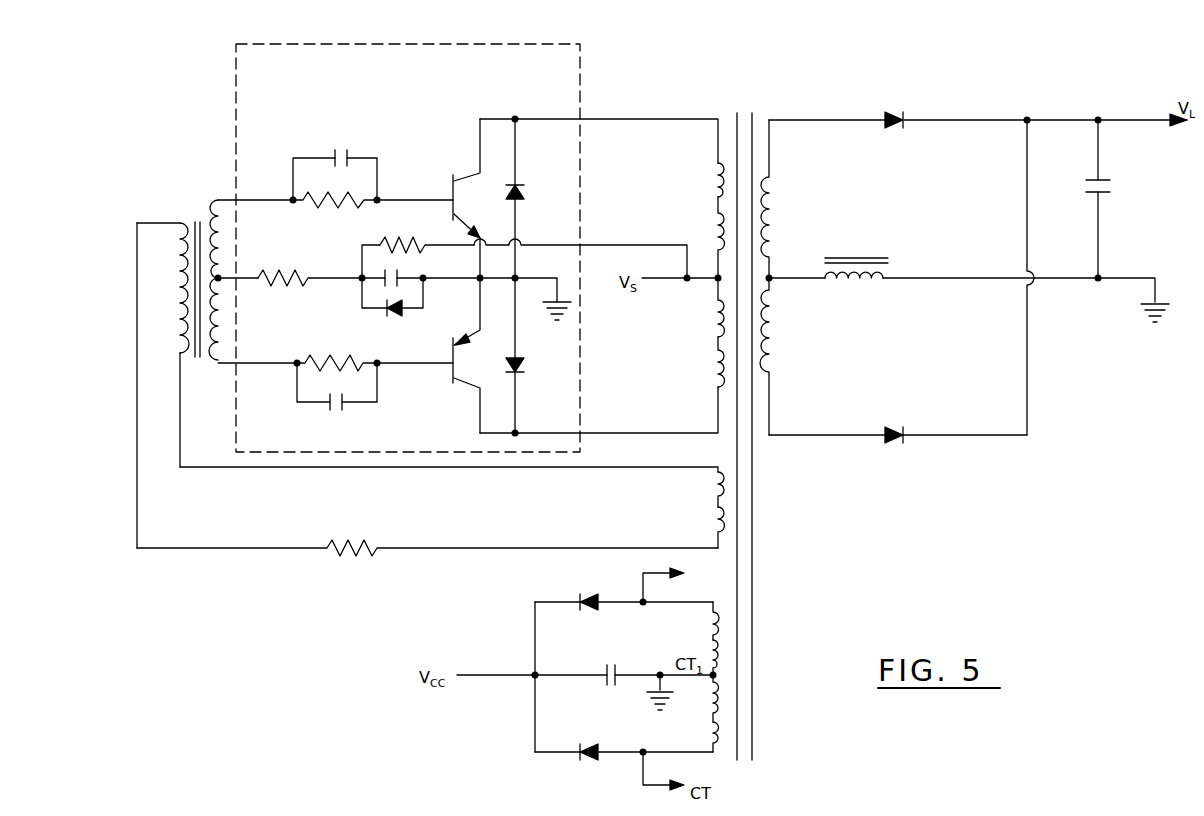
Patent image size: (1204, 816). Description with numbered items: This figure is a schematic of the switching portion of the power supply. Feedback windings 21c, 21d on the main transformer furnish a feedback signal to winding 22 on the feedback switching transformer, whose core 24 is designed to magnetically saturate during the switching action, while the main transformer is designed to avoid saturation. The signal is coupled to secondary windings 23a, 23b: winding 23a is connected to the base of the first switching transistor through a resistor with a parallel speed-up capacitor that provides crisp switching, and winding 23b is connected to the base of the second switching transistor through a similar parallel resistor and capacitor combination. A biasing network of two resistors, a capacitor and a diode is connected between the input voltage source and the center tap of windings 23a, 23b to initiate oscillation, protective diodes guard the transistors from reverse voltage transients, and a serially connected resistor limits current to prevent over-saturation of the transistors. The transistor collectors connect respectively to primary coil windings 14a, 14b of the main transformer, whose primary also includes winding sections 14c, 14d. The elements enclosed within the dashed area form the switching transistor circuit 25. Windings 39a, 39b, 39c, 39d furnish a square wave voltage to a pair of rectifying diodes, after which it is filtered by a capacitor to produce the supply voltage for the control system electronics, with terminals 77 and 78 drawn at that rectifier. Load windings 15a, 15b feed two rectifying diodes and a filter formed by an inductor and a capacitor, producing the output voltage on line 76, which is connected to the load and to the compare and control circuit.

The winding 22 is at (178, 292).
The secondary winding 23a is at (220, 224).
The secondary winding 23b is at (218, 338).
The core of the coupling transformer 24 is at (198, 366).
The switching transistor circuit 25 is at (236, 74).
The primary coil winding 14a is at (716, 182).
The primary coil winding 14b is at (716, 372).
The primary coil winding 14c is at (716, 232).
The primary coil winding 14d is at (716, 312).
The feedback winding 21c is at (716, 490).
The feedback winding 21d is at (716, 514).
The load winding 15a is at (769, 200).
The load winding 15b is at (770, 338).
The winding 39a is at (710, 650).
The winding 39b is at (710, 692).
The winding 39c is at (710, 622).
The winding 39d is at (710, 728).
The line 76 is at (1115, 120).
The auxiliary output terminal 77 is at (660, 572).
The center tap terminal 78 is at (645, 776).